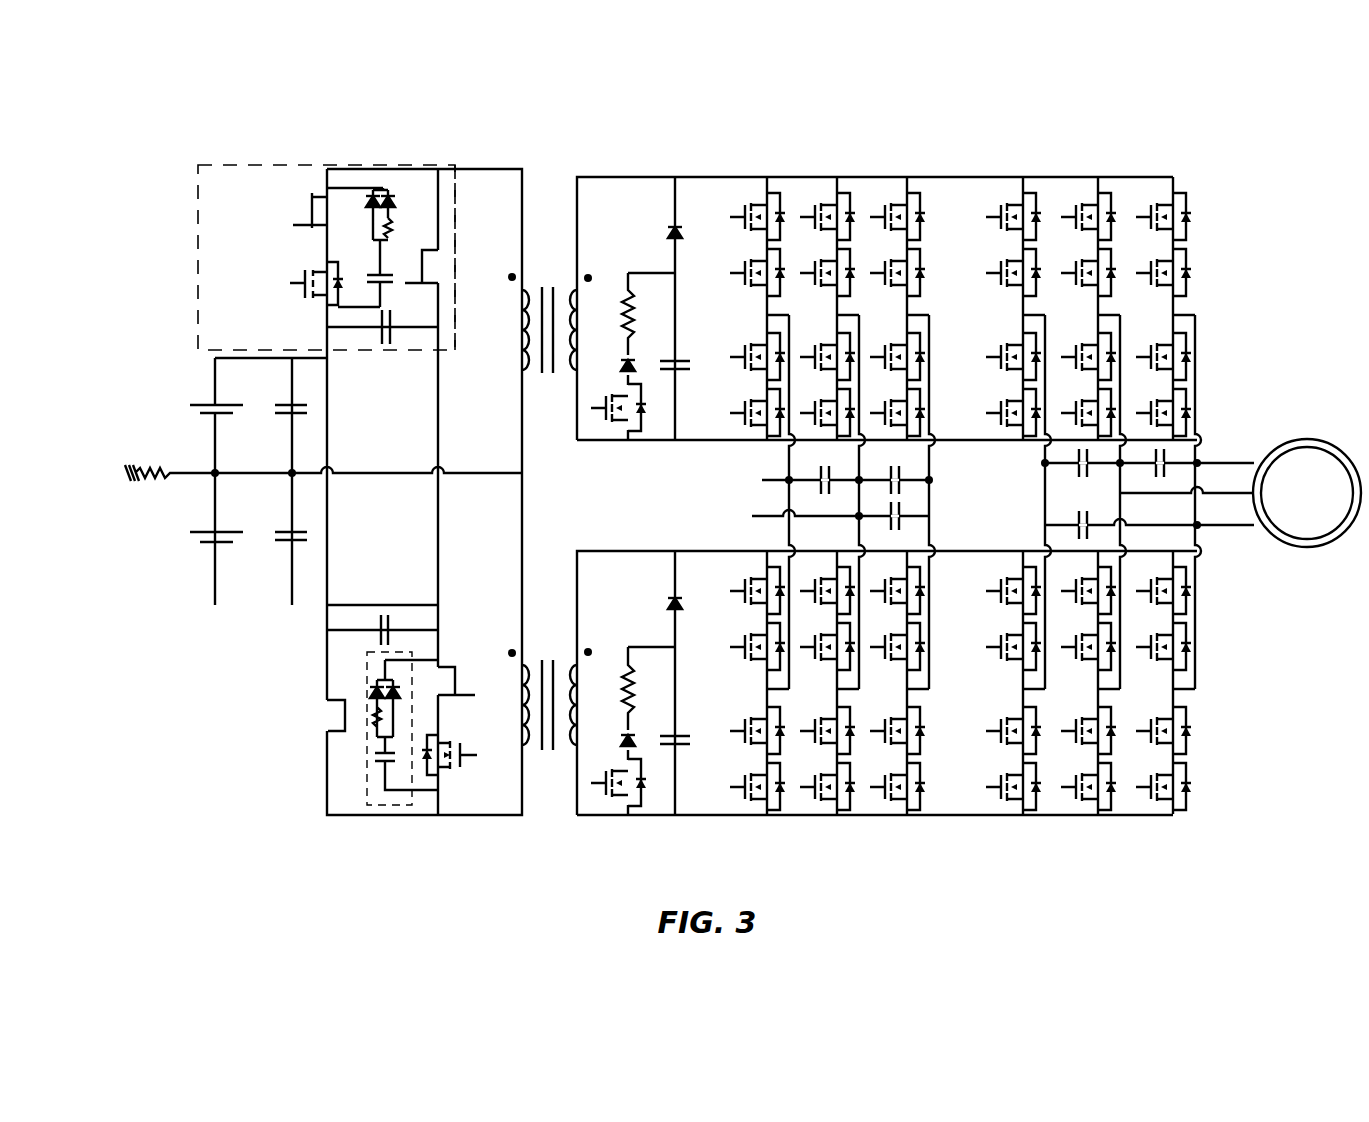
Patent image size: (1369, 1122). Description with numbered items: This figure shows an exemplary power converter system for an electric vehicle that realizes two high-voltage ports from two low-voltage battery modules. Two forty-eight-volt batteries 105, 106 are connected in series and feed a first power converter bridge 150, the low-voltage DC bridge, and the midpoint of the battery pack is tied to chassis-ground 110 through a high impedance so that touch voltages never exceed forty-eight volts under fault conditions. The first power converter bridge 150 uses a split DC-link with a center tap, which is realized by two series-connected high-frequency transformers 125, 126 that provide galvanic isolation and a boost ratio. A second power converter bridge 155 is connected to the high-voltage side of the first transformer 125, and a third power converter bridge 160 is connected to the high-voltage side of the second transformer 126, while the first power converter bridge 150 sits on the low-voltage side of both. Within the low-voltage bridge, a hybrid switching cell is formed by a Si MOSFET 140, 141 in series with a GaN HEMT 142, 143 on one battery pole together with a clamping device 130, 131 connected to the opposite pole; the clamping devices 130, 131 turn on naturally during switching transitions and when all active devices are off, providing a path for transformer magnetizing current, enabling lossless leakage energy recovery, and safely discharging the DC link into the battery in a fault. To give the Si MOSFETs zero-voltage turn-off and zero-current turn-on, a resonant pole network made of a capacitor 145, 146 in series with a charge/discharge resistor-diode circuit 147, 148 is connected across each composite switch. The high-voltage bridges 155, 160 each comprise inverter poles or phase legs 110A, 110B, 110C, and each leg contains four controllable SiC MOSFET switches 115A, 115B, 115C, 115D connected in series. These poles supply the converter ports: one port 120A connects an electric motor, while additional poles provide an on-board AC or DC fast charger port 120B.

The 48-volt battery 105 is at (200, 398).
The 48-volt battery 106 is at (205, 548).
The chassis-ground 110 is at (130, 465).
The inverter pole 110A is at (1032, 165).
The inverter pole 110B is at (1099, 168).
The inverter pole 110C is at (1172, 168).
The controllable switch 115A is at (1190, 202).
The controllable switch 115B is at (1190, 265).
The controllable switch 115C is at (1195, 345).
The controllable switch 115D is at (1190, 405).
The port 120A is at (1253, 527).
The fast charger port 120B is at (594, 482).
The first transformer 125 is at (520, 345).
The second transformer 126 is at (515, 688).
The clamping device 130 is at (430, 268).
The clamping device 131 is at (330, 712).
The Si MOSFET 140 is at (305, 275).
The Si MOSFET 141 is at (462, 762).
The GaN HEMT 142 is at (312, 197).
The GaN HEMT 143 is at (456, 680).
The capacitor 145 is at (368, 273).
The capacitor 146 is at (375, 765).
The charge/discharge resistor-diode circuit 147 is at (389, 228).
The charge/discharge resistor-diode circuit 148 is at (375, 690).
The first power converter bridge 150 is at (228, 635).
The second power converter bridge 155 is at (716, 156).
The third power converter bridge 160 is at (658, 848).